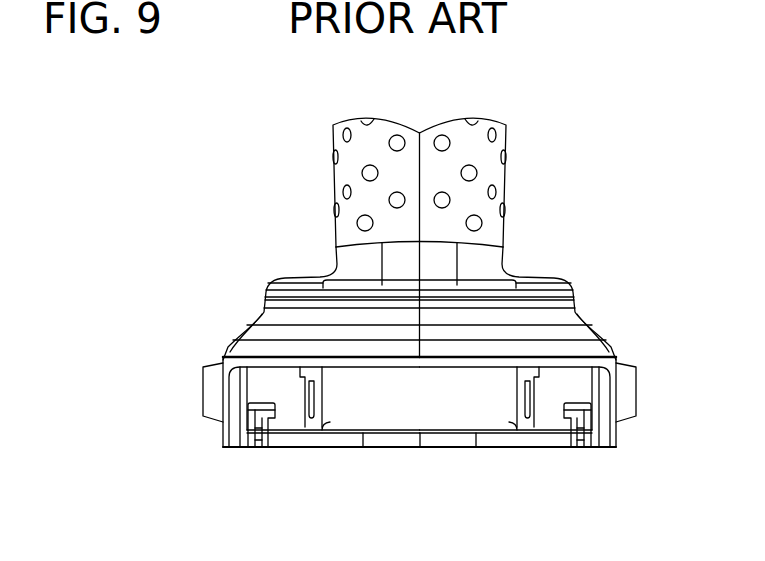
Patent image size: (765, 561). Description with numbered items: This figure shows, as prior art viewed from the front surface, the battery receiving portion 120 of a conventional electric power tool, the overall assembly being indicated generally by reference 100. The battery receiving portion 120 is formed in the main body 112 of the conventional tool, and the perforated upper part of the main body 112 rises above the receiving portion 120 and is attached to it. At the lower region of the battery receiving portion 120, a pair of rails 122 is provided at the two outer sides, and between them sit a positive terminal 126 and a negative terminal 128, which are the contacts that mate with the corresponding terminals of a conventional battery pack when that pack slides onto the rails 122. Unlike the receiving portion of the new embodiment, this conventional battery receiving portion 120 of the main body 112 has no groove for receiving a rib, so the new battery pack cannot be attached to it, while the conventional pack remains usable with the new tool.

The dust separating apparatus (prior art) 100 is at (560, 92).
The main body 112 is at (495, 175).
The battery receiving portion 120 is at (604, 464).
The pair of rails 122 is at (283, 440).
The positive terminal 126 is at (510, 437).
The negative terminal 128 is at (330, 437).